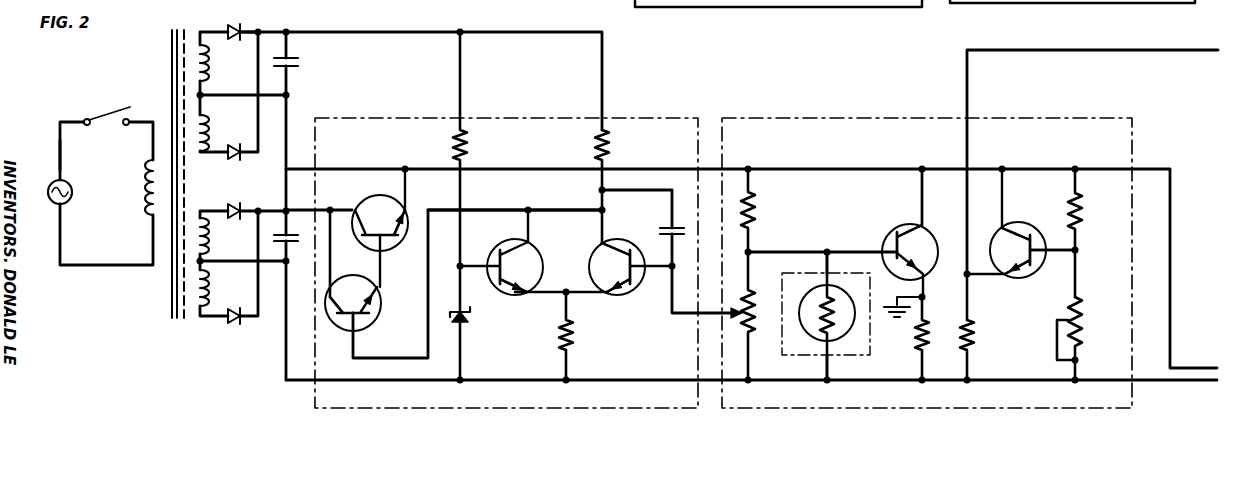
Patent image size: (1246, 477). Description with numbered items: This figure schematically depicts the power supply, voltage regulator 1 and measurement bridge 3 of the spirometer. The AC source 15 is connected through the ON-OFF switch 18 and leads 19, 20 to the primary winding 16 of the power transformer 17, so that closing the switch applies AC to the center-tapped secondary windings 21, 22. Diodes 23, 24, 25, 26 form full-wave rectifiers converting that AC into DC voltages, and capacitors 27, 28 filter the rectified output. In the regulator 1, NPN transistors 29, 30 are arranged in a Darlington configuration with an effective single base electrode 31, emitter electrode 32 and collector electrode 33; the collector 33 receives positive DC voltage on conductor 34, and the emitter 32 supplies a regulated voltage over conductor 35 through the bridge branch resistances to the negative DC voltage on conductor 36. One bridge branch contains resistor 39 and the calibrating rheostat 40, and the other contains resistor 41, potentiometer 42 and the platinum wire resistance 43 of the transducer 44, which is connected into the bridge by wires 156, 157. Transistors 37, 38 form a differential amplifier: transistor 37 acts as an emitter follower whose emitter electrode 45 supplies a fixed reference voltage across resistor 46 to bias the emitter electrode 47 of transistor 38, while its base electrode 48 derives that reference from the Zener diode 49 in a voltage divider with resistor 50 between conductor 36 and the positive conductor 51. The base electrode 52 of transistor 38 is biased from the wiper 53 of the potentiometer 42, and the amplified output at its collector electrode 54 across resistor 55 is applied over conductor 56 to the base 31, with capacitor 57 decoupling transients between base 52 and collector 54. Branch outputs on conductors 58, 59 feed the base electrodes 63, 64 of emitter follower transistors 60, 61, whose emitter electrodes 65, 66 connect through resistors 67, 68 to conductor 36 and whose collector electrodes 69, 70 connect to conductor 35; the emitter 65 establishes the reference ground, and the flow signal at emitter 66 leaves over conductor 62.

The transistor voltage regulator 1 is at (388, 118).
The measurement bridge 3 is at (820, 118).
The AC source 15 is at (68, 206).
The primary winding 16 is at (145, 186).
The power transformer 17 is at (173, 26).
The ON-OFF switch 18 is at (108, 124).
The lead 19 is at (60, 155).
The lead 20 is at (90, 268).
The secondary winding 21 is at (213, 60).
The secondary winding 22 is at (211, 233).
The diode 23 is at (238, 25).
The diode 24 is at (233, 162).
The diode 25 is at (234, 203).
The diode 26 is at (242, 327).
The capacitor 27 is at (300, 64).
The capacitor 28 is at (303, 241).
The NPN transistor 29 is at (370, 198).
The NPN transistor 30 is at (382, 298).
The base electrode 31 is at (353, 318).
The emitter electrode 32 is at (402, 236).
The collector electrode 33 is at (338, 292).
The conductor 34 is at (300, 207).
The conductor 35 is at (420, 166).
The conductor 36 is at (285, 369).
The NPN transistor 37 is at (543, 271).
The NPN transistor 38 is at (597, 248).
The resistor 39 is at (1085, 215).
The rheostat 40 is at (1082, 320).
The resistor 41 is at (757, 205).
The potentiometer 42 is at (758, 300).
The transducer resistance 43 is at (830, 310).
The transducer 44 is at (782, 341).
The emitter electrode 45 is at (510, 285).
The resistor 46 is at (580, 340).
The emitter electrode 47 is at (612, 293).
The base electrode 48 is at (498, 248).
The Zener diode 49 is at (473, 309).
The resistor 50 is at (475, 142).
The conductor 51 is at (395, 32).
The base electrode 52 is at (638, 262).
The wiper 53 is at (723, 316).
The collector electrode 54 is at (609, 240).
The resistor 55 is at (613, 142).
The conductor 56 is at (488, 210).
The capacitor 57 is at (660, 226).
The conductor 58 is at (782, 250).
The conductor 59 is at (1060, 254).
The NPN transistor 60 is at (925, 222).
The NPN transistor 61 is at (1029, 228).
The conductor 62 is at (1105, 52).
The base electrode 63 is at (893, 240).
The base electrode 64 is at (1047, 243).
The emitter electrode 65 is at (933, 250).
The emitter electrode 66 is at (1015, 276).
The resistor 67 is at (913, 345).
The resistor 68 is at (977, 338).
The collector electrode 69 is at (910, 232).
The collector electrode 70 is at (1013, 228).
The wire 156 is at (832, 250).
The wire 157 is at (829, 365).